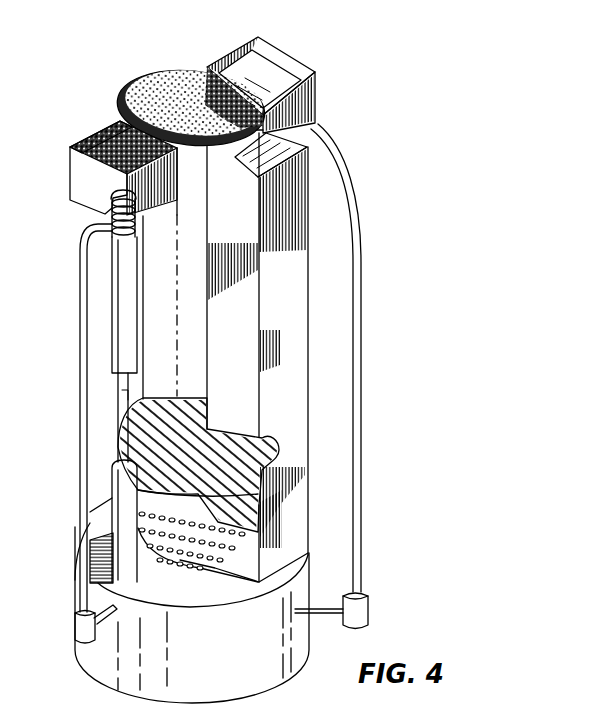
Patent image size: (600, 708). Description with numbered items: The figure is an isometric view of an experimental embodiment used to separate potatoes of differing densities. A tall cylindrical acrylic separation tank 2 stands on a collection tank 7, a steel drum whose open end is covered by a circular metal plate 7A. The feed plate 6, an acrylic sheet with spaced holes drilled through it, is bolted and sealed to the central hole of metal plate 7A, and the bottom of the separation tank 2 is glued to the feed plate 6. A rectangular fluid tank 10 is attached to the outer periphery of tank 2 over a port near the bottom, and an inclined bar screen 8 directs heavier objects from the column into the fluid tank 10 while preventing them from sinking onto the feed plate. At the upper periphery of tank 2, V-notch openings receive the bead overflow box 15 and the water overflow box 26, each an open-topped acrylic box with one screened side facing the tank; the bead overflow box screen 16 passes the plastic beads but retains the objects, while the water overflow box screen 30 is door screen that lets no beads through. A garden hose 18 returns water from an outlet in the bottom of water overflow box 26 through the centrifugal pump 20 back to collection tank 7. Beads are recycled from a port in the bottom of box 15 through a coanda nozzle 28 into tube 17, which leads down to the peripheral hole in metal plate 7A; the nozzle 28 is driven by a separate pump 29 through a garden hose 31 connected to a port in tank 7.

The separation tank 2 is at (119, 395).
The feed plate 6 is at (183, 563).
The collection tank 7 is at (293, 669).
The metal plate 7A is at (203, 597).
The inclined bar screen 8 is at (124, 420).
The fluid tank 10 is at (309, 307).
The bead overflow box 15 is at (88, 139).
The bead overflow box screen 16 is at (119, 122).
The tube 17 is at (112, 337).
The garden hose 18 is at (362, 378).
The centrifugal pump 20 is at (369, 608).
The water overflow box 26 is at (263, 43).
The coanda nozzle 28 is at (111, 222).
The pump 29 is at (74, 623).
The water overflow box screen 30 is at (202, 82).
The garden hose 31 is at (80, 272).